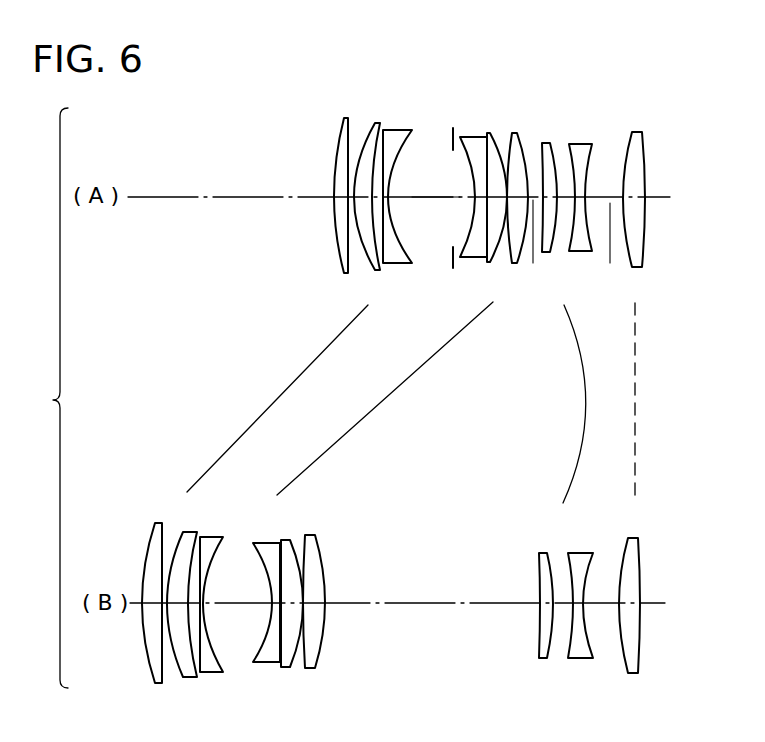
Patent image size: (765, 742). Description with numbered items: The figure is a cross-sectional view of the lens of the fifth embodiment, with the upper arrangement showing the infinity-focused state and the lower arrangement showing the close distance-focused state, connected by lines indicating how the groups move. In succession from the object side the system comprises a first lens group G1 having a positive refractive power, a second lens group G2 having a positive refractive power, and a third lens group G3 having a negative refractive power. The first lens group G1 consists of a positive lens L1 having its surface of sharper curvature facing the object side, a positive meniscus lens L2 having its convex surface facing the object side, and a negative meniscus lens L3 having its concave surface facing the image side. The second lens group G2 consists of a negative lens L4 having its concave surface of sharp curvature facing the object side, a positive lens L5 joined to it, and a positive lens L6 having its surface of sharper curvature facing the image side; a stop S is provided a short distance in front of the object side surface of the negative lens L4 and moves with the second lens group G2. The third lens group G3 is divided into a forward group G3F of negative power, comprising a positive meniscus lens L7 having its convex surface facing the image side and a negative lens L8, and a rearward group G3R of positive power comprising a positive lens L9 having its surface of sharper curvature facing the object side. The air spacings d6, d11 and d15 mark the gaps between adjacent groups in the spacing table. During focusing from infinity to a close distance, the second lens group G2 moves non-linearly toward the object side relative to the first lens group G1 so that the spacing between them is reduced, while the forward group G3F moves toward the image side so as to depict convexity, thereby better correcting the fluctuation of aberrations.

The first lens group G1 is at (415, 90).
The second lens group G2 is at (532, 92).
The third lens group G3 is at (665, 43).
The forward group G3F is at (613, 92).
The rearward group G3R is at (663, 92).
The positive lens L1 is at (342, 127).
The positive meniscus lens L2 is at (374, 125).
The negative meniscus lens L3 is at (396, 131).
The negative lens L4 is at (470, 137).
The positive lens L5 is at (490, 133).
The positive lens L6 is at (515, 133).
The positive meniscus lens L7 is at (545, 142).
The negative lens L8 is at (585, 143).
The positive lens L9 is at (636, 131).
The stop S is at (449, 140).
The air space between first and second lens groups d6 is at (438, 199).
The air space between second and third lens groups d11 is at (538, 245).
The air space between front and rear sub-groups of third lens group d15 is at (616, 248).